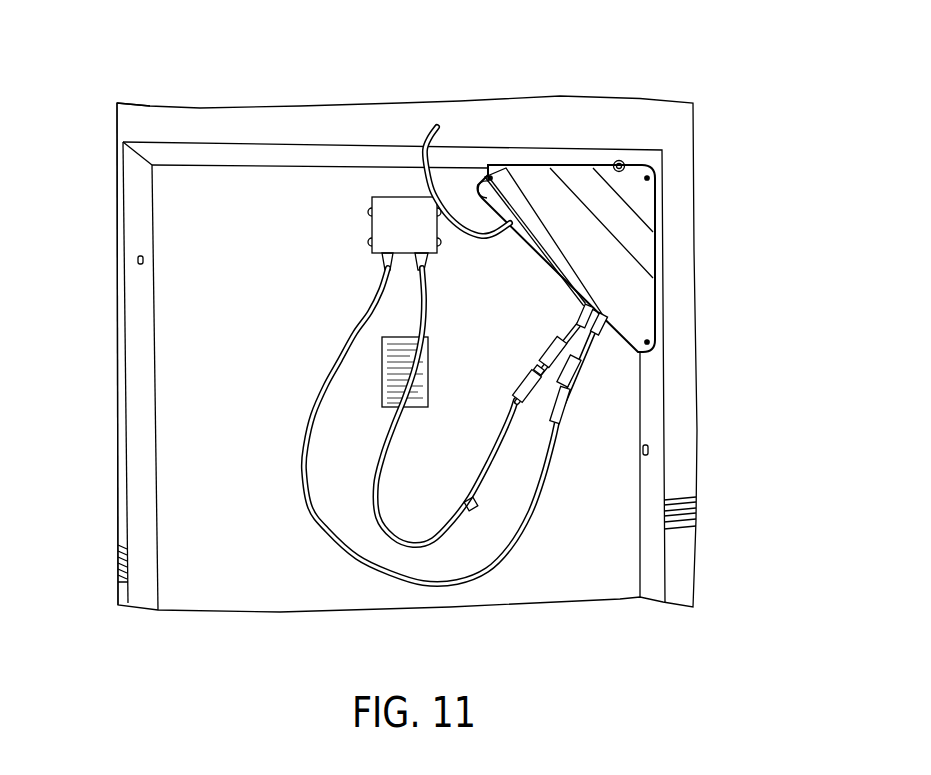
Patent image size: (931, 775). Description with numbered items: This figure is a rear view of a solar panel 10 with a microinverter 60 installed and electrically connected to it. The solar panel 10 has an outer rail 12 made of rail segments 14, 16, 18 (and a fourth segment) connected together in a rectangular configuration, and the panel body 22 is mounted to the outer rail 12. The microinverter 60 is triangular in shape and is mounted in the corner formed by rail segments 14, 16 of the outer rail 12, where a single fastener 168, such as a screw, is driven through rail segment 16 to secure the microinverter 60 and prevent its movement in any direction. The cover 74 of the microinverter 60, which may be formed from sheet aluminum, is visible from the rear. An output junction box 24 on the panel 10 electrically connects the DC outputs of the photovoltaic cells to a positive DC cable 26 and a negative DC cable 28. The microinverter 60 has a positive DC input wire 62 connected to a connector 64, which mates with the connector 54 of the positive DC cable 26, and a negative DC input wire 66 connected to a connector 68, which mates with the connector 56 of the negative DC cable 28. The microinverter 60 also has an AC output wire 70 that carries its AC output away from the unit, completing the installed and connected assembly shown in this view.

The solar panel 10 is at (735, 92).
The outer rail 12 is at (679, 428).
The rail segment 14 is at (652, 487).
The rail segment 16 is at (297, 156).
The rail segment 18 is at (131, 333).
The panel body 22 is at (261, 397).
The output junction box 24 is at (372, 258).
The positive DC cable 26 is at (308, 505).
The negative DC cable 28 is at (376, 481).
The connector 54 is at (559, 428).
The connector 56 is at (513, 393).
The microinverter 60 is at (645, 228).
The positive DC input wire 62 is at (590, 345).
The connector 64 is at (578, 405).
The negative DC input wire 66 is at (567, 332).
The connector 68 is at (543, 357).
The AC output wire 70 is at (437, 127).
The cover 74 is at (573, 182).
The fastener 168 is at (622, 160).